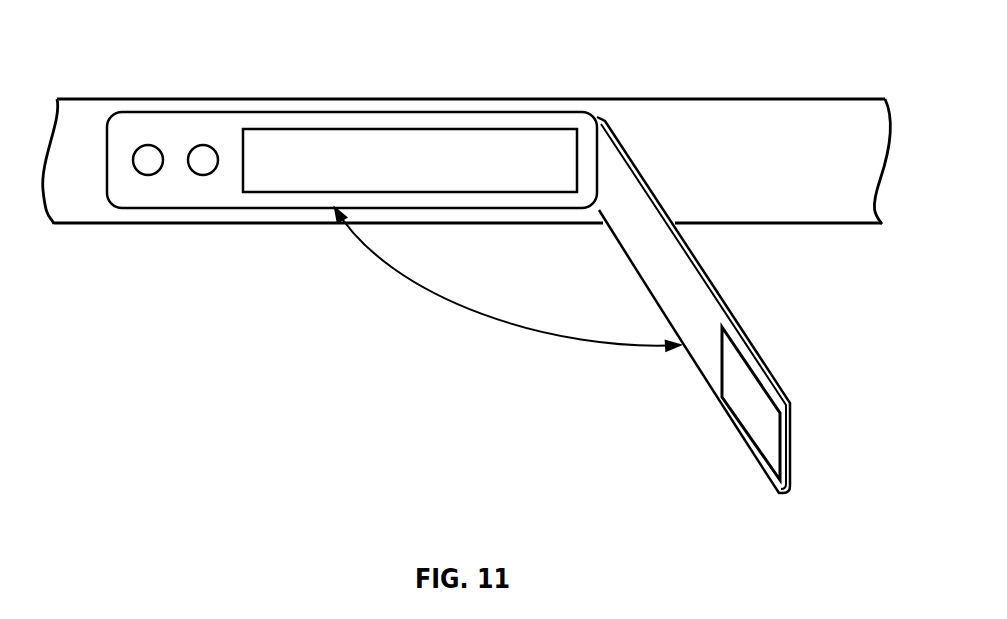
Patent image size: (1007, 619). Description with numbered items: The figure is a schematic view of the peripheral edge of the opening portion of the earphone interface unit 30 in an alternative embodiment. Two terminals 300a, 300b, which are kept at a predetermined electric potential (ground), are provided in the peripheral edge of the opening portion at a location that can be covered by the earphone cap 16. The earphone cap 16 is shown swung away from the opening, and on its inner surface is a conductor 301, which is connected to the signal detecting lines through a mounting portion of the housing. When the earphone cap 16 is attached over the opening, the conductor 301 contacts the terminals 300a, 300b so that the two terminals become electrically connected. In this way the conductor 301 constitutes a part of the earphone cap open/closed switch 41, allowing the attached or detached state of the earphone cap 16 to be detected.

The earphone cap open/closed switch 41 is at (175, 127).
The earphone interface unit 30 is at (337, 145).
The terminal 300a is at (148, 176).
The terminal 300b is at (203, 176).
The earphone cap 16 is at (650, 183).
The conductor 301 is at (753, 437).